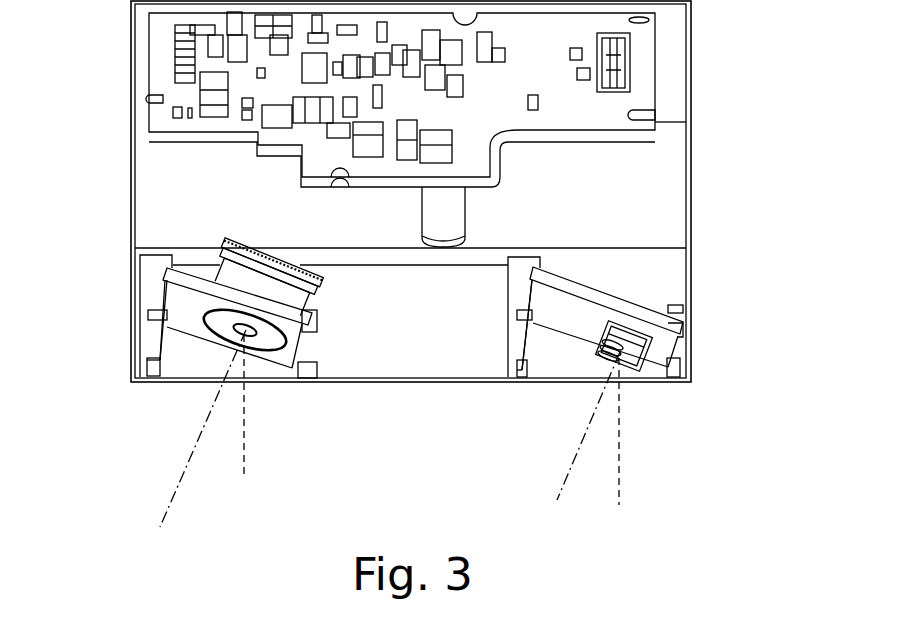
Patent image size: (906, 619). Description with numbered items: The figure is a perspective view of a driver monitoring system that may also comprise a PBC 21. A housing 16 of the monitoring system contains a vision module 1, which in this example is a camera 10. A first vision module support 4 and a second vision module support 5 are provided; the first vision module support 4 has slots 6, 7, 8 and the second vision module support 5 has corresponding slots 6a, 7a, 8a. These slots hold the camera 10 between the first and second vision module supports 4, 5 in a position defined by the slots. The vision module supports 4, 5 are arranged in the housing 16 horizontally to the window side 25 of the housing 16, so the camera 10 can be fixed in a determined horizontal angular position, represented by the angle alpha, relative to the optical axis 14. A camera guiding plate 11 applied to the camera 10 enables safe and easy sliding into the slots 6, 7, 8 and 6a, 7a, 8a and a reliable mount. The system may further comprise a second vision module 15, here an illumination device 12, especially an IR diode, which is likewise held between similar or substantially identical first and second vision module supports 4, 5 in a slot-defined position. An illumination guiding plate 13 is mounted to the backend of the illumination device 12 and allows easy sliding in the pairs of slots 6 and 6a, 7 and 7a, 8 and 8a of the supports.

The vision module 1 is at (217, 363).
The first vision module support 4 is at (145, 267).
The second vision module support 5 is at (683, 310).
The slot 6 is at (145, 365).
The slot 6a is at (298, 370).
The slot 7 is at (148, 315).
The slot 7a is at (305, 370).
The slot 8 is at (168, 297).
The slot 8a is at (318, 340).
The camera 10 is at (245, 275).
The camera guiding plate 11 is at (215, 262).
The illumination device 12 is at (612, 318).
The illumination guiding plate 13 is at (580, 325).
The optical axis 14 is at (183, 480).
The second vision module 15 is at (588, 360).
The housing 16 is at (157, 150).
The PBC 21 is at (645, 78).
The window side 25 is at (405, 383).